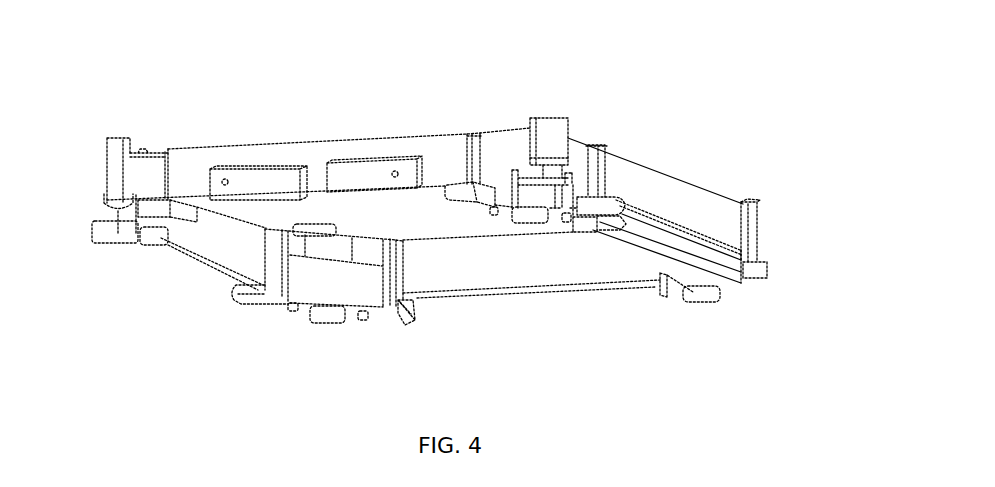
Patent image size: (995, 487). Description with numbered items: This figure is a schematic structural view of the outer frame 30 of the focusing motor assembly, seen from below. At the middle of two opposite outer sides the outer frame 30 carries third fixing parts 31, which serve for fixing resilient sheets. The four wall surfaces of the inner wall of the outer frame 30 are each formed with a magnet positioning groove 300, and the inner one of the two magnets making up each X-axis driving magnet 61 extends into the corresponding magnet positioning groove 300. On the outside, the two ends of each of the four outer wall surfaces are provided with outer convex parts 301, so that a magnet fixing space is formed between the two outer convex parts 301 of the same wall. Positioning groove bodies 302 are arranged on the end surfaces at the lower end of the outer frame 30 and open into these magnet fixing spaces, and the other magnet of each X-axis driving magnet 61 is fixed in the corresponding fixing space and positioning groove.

The outer frame 30 is at (437, 135).
The third fixing part 31 is at (270, 187).
The outer convex part 301 is at (620, 205).
The positioning groove body 302 is at (404, 300).
The X-axis driving magnet 61 is at (677, 247).
The magnet positioning groove 300 is at (568, 273).